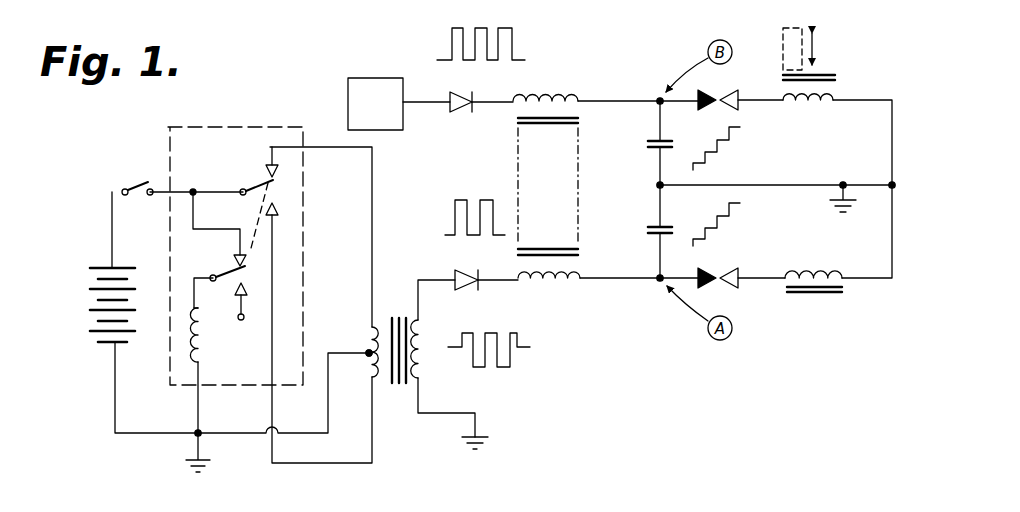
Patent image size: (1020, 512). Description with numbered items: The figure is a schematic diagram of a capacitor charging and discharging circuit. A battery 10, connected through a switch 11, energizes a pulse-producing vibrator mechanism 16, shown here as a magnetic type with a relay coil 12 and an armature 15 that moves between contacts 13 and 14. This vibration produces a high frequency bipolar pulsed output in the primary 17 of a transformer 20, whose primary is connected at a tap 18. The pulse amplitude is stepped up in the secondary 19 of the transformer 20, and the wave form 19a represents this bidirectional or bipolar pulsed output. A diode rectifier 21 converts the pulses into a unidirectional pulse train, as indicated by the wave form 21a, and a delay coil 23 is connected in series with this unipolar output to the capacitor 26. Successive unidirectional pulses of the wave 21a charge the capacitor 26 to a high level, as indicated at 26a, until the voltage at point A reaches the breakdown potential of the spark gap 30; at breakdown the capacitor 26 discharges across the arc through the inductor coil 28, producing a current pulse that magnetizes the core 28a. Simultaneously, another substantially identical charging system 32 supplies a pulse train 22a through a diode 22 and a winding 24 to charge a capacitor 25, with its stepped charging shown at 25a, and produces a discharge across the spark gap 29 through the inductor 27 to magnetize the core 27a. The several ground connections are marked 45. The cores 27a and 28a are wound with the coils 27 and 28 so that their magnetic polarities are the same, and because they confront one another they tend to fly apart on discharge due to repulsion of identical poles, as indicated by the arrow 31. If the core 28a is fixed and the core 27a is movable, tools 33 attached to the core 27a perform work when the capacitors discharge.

The battery 10 is at (91, 252).
The on-off switch 11 is at (121, 176).
The relay coil 12 is at (194, 335).
The contact 13 is at (266, 171).
The contact 14 is at (282, 207).
The armature 15 is at (241, 183).
The pulse-producing vibrator mechanism 16 is at (263, 125).
The primary 17 is at (372, 334).
The center tap 18 is at (367, 356).
The secondary 19 is at (426, 371).
The wave form 19a is at (531, 348).
The transformer 20 is at (397, 311).
The diode rectifier 21 is at (465, 291).
The wave 21a is at (452, 222).
The diode 22 is at (457, 114).
The waveform 22a is at (520, 52).
The delay coil 23 is at (530, 286).
The primary winding 24 is at (568, 100).
The capacitor 25 is at (648, 147).
The staircase waveform 25a is at (717, 152).
The capacitor 26 is at (648, 228).
The wave form 26a is at (717, 228).
The inductor 27 is at (845, 91).
The core 27a is at (836, 78).
The inductor coil 28 is at (846, 280).
The core 28a is at (813, 295).
The spark gap 29 is at (722, 97).
The spark gap 30 is at (722, 305).
The arrow 31 is at (816, 50).
The charging system 32 is at (375, 104).
The tools 33 is at (783, 43).
The ground 45 is at (201, 461).